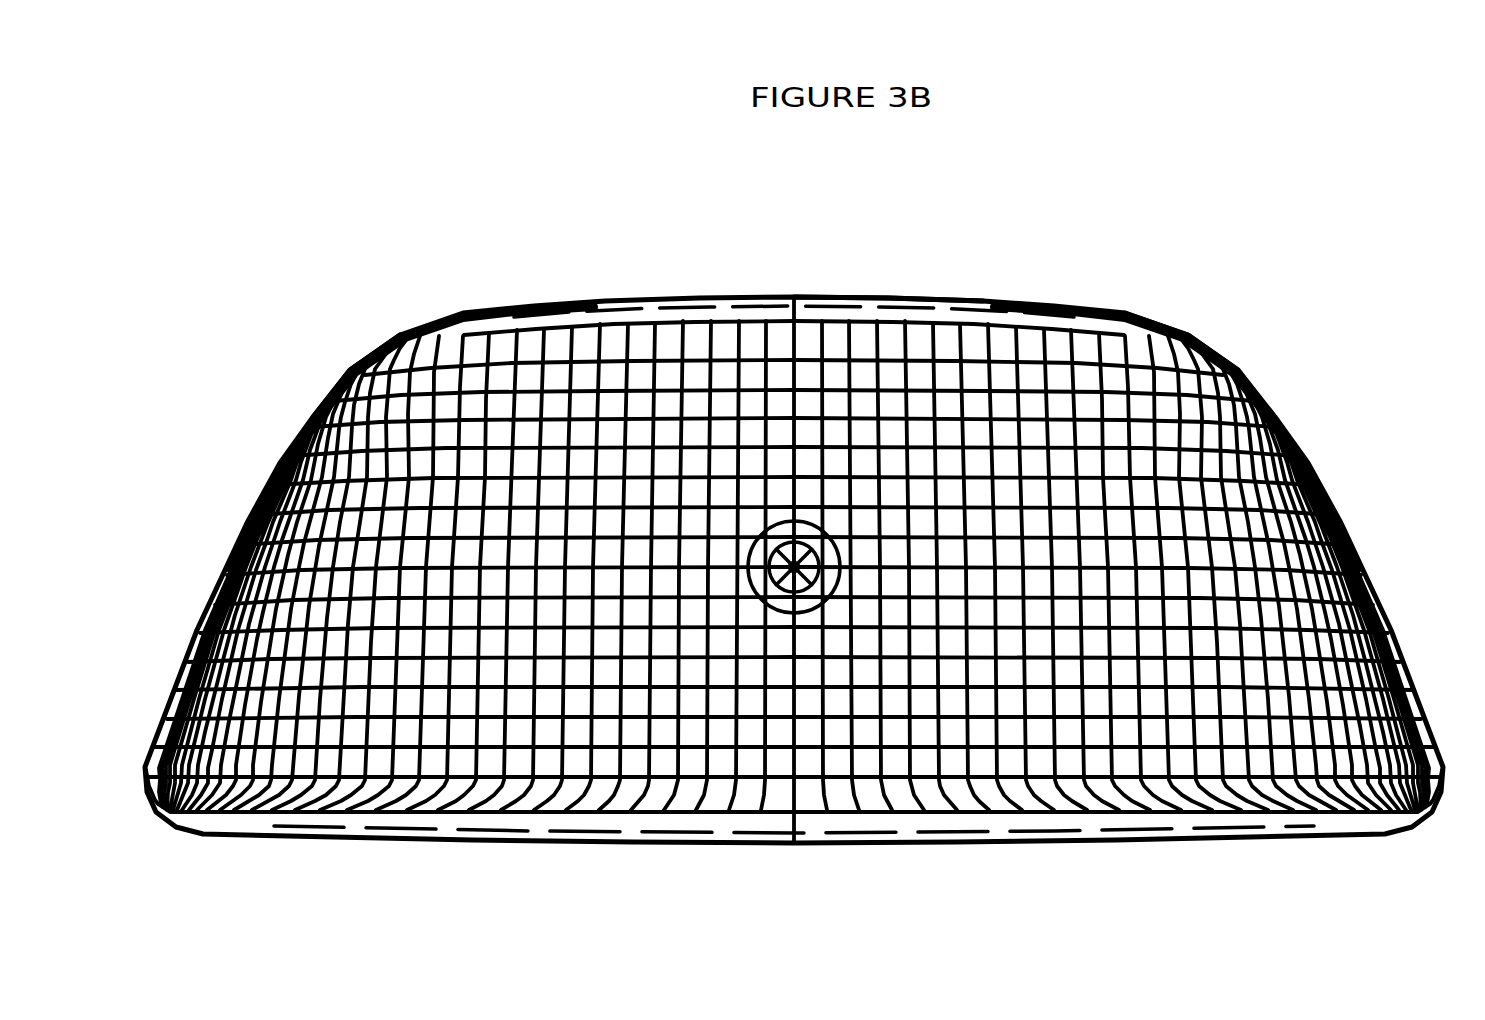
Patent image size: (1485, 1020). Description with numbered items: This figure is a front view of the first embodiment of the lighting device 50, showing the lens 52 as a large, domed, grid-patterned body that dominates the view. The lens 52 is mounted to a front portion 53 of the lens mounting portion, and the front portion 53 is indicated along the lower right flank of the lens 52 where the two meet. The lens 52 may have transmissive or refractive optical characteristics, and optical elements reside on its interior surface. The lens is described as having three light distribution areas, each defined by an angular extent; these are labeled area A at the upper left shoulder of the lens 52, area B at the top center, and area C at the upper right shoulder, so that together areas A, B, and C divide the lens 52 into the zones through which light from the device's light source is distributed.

The lighting device 50 is at (794, 489).
The lens 52 is at (1277, 363).
The front portion 53 is at (1307, 427).
The light distribution area A is at (350, 367).
The light distribution area B is at (853, 313).
The light distribution area C is at (1193, 333).